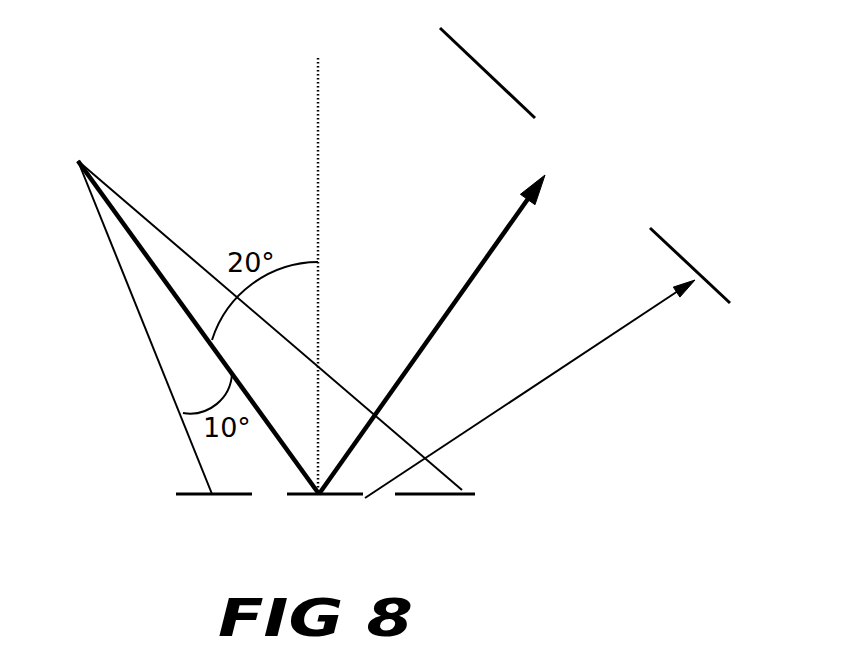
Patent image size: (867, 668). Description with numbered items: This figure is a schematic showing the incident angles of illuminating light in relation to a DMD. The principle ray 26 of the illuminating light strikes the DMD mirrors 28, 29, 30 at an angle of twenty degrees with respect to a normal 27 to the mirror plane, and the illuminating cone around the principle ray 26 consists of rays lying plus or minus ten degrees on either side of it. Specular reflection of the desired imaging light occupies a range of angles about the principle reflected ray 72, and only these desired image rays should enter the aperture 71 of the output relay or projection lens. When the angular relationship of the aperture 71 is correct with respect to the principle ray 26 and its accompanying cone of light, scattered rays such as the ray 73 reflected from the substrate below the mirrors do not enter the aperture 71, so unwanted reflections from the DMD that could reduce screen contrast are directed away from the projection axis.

The principle ray 26 is at (185, 308).
The normal 27 is at (327, 256).
The DMD mirror 28 is at (165, 347).
The DMD mirror 29 is at (325, 514).
The DMD mirror 30 is at (276, 347).
The aperture 71 is at (598, 165).
The principle reflected ray 72 is at (446, 334).
The scattered ray 73 is at (530, 389).